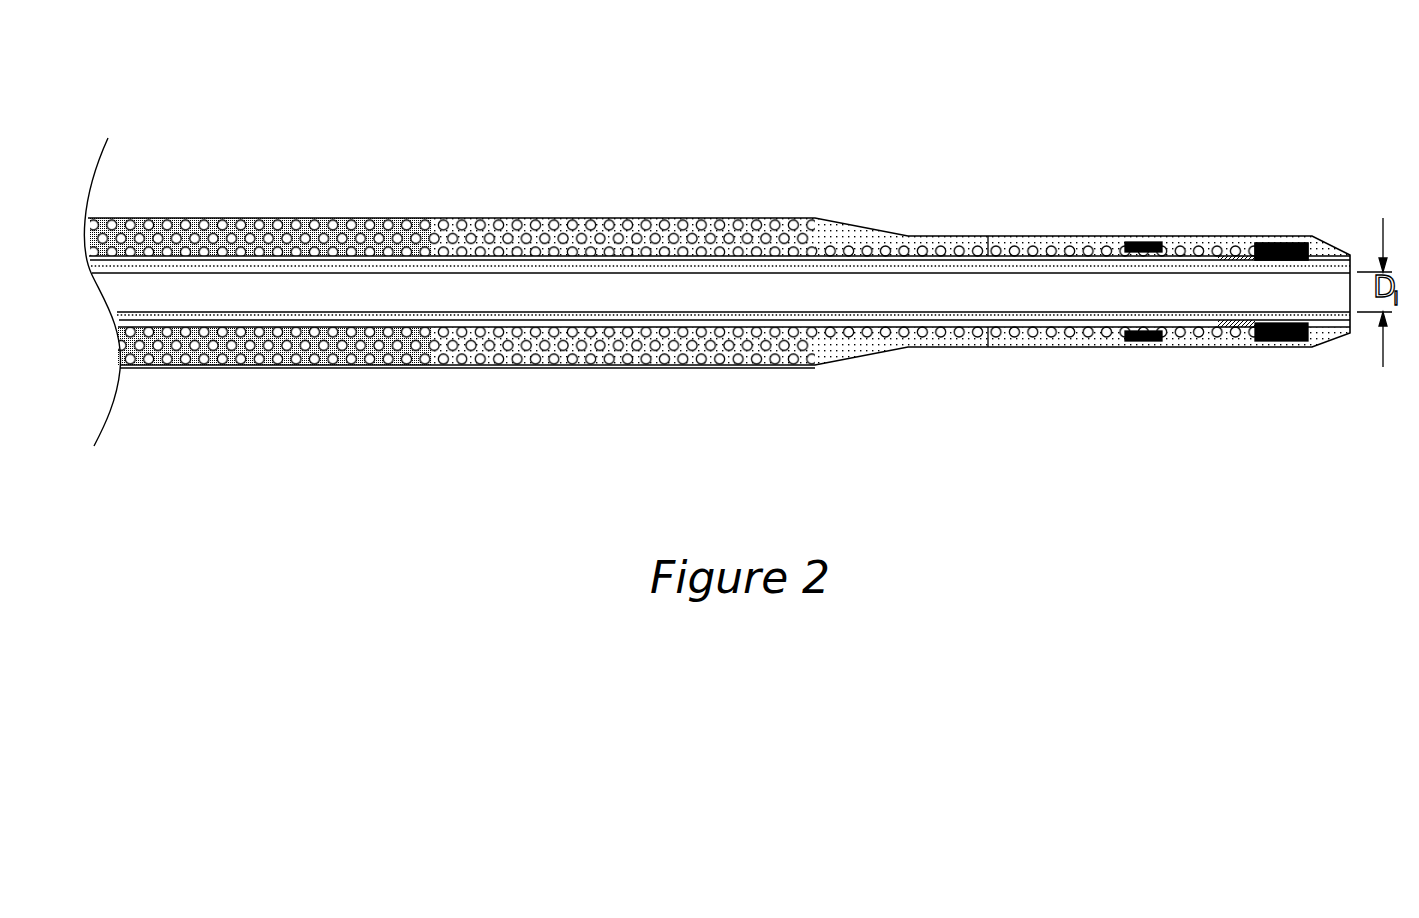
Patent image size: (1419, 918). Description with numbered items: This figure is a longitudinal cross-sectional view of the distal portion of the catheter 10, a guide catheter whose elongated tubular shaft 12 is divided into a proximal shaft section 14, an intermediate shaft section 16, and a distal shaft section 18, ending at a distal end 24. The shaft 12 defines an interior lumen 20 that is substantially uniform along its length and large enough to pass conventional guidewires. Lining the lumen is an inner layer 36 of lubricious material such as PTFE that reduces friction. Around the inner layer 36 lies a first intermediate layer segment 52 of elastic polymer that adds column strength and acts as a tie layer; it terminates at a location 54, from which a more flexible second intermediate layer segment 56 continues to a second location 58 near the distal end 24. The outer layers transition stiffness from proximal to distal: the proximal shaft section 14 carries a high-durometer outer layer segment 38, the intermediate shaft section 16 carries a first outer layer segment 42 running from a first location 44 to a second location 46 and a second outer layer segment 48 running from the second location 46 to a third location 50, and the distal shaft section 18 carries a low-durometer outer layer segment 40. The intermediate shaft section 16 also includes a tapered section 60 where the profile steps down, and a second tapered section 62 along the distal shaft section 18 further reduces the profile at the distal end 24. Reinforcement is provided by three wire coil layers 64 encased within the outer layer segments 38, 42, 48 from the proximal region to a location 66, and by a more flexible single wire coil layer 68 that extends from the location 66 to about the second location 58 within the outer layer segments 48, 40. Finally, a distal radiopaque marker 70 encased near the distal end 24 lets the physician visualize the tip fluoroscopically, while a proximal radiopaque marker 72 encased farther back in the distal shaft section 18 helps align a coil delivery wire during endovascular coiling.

The catheter 10 is at (699, 80).
The elongated tubular shaft 12 is at (340, 218).
The proximal shaft section 14 is at (258, 180).
The intermediate shaft section 16 is at (683, 183).
The distal shaft section 18 is at (1112, 208).
The interior lumen 20 is at (675, 296).
The distal end 24 is at (1353, 253).
The inner layer 36 is at (910, 323).
The outer layer segment 38 is at (245, 362).
The outer layer segment 40 is at (1066, 345).
The first outer layer segment 42 is at (578, 360).
The first location 44 is at (433, 352).
The second location 46 is at (746, 352).
The second outer layer segment 48 is at (832, 352).
The third location 50 is at (988, 333).
The first intermediate layer segment 52 is at (600, 258).
The location 54 is at (1218, 257).
The second intermediate layer segment 56 is at (1230, 327).
The second location 58 is at (1254, 256).
The tapered section 60 is at (860, 226).
The second tapered section 62 is at (1332, 244).
The wire coil layers 64 is at (478, 252).
The location 66 is at (784, 218).
The single wire coil layer 68 is at (1016, 250).
The distal radiopaque marker 70 is at (1287, 345).
The proximal radiopaque marker 72 is at (1147, 343).